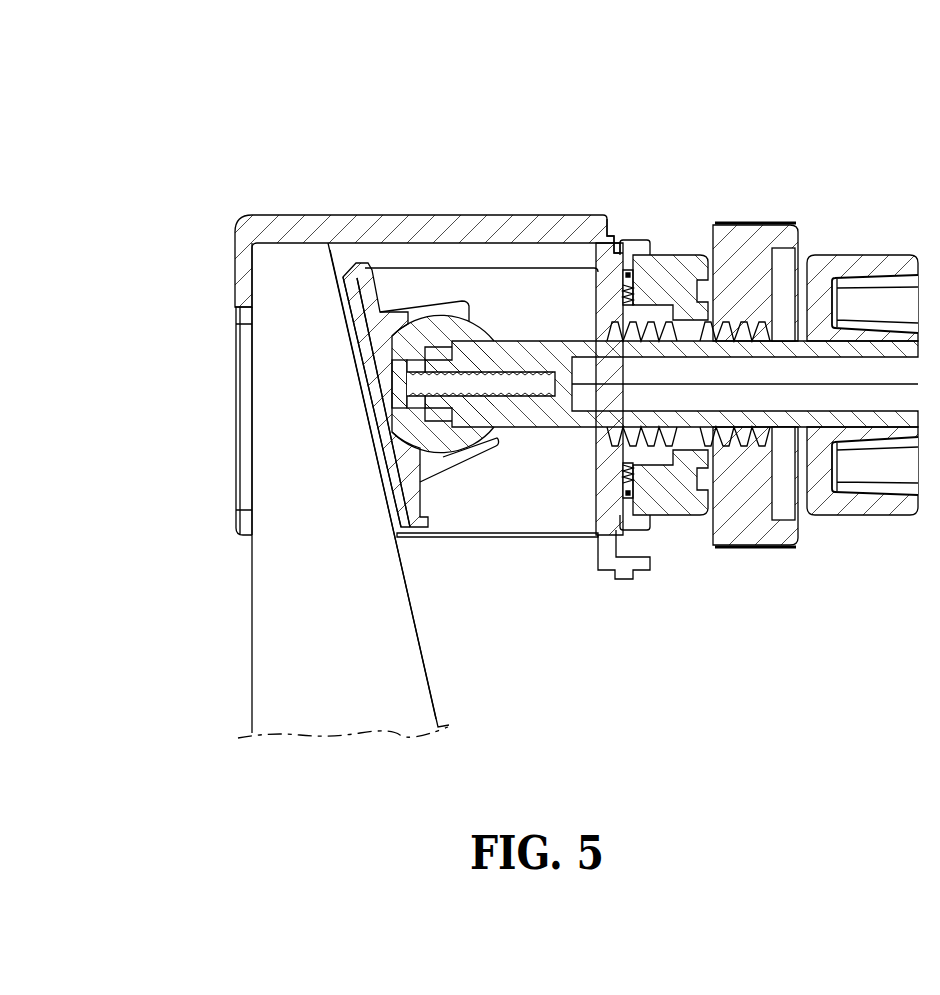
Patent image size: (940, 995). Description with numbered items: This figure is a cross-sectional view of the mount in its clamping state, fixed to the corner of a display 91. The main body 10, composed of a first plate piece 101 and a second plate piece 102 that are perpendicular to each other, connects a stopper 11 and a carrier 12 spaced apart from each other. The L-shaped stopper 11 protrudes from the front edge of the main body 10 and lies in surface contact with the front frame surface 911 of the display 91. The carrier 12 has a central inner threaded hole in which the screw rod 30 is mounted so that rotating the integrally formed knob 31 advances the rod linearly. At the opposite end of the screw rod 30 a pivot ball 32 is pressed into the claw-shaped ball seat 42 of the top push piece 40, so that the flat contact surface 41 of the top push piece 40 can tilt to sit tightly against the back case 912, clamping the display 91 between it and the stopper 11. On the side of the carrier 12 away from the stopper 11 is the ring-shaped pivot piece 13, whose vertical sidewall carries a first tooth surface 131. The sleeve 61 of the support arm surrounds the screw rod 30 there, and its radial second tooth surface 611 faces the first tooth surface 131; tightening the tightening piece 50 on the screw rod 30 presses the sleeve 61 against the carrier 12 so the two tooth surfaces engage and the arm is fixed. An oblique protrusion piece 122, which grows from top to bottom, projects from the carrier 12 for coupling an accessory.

The main body 10 is at (410, 371).
The first plate piece 101 is at (446, 218).
The second plate piece 102 is at (391, 244).
The stopper 11 is at (247, 262).
The carrier 12 is at (598, 268).
The pivot piece 13 is at (643, 247).
The first tooth surface 131 is at (630, 265).
The oblique protrusion piece 122 is at (625, 580).
The screw rod 30 is at (570, 411).
The knob 31 is at (882, 473).
The pivot ball 32 is at (464, 327).
The top push piece 40 is at (421, 457).
The contact surface 41 is at (395, 497).
The claw-shaped ball seat 42 is at (452, 437).
The tightening piece 50 is at (765, 238).
The sleeve 61 is at (690, 515).
The second tooth surface 611 is at (635, 244).
The display 91 is at (327, 655).
The front frame surface 911 is at (253, 370).
The back case 912 is at (433, 688).